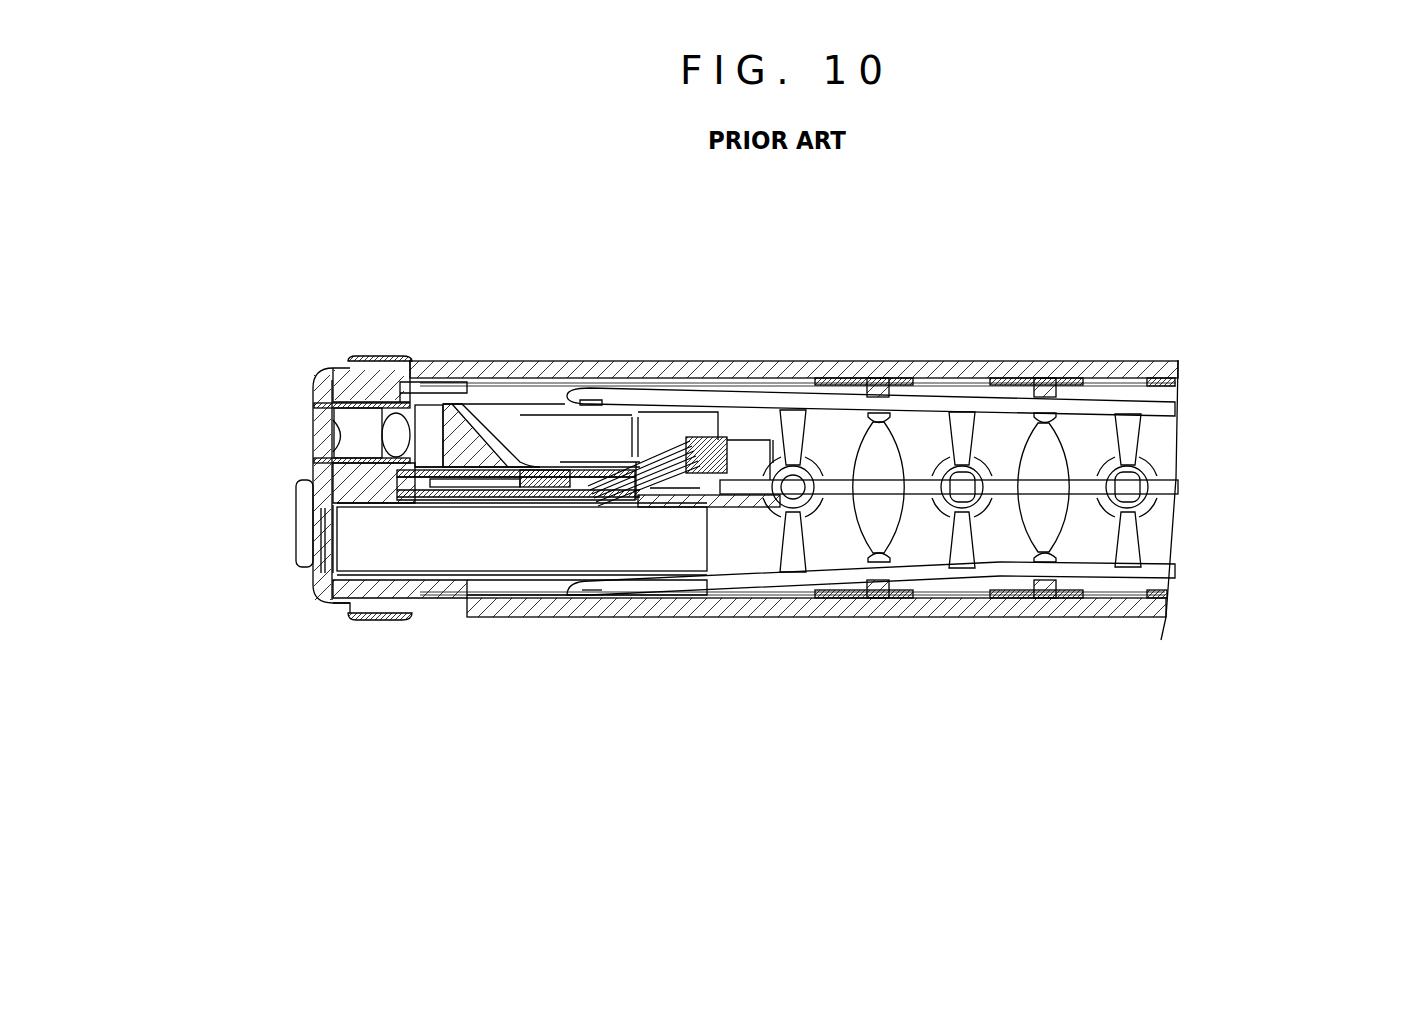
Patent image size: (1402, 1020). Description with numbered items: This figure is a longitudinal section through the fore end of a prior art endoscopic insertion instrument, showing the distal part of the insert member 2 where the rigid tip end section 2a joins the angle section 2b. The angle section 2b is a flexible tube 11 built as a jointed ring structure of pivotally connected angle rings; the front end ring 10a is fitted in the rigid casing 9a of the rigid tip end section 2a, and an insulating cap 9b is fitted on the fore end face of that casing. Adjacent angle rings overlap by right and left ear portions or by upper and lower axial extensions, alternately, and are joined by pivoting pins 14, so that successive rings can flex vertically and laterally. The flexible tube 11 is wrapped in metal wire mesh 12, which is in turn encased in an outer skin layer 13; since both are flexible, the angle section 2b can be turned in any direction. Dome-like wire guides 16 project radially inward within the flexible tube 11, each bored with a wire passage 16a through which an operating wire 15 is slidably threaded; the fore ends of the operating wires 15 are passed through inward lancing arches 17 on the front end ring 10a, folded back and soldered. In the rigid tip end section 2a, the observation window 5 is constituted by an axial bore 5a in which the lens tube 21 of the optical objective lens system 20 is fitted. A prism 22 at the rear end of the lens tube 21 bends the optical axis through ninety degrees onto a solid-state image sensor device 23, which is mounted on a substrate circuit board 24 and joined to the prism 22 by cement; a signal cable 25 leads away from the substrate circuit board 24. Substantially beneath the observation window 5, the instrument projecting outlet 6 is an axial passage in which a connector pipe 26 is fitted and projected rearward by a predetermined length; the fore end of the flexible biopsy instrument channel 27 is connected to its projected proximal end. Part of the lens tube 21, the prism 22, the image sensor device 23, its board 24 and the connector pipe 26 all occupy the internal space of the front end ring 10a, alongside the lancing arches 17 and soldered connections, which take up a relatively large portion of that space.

The insert member 2 is at (882, 210).
The rigid tip end section 2a is at (316, 605).
The angle section 2b is at (1128, 640).
The observation window 5 is at (313, 440).
The axial bore 5a is at (365, 417).
The instrument projecting outlet 6 is at (377, 552).
The rigid casing 9a is at (385, 593).
The insulating cap 9b is at (321, 590).
The front end ring 10a is at (705, 360).
The flexible tube 11 is at (800, 362).
The metal wire mesh 12 is at (1107, 622).
The outer skin layer 13 is at (1152, 372).
The pivoting pin 14 is at (879, 373).
The operating wire 15 is at (1158, 408).
The wire guide 16 is at (778, 360).
The wire passage 16a is at (856, 382).
The lancing arch 17 is at (590, 395).
The optical objective lens system 20 is at (386, 356).
The lens tube 21 is at (313, 366).
The prism 22 is at (458, 440).
The solid-state image sensor device 23 is at (452, 487).
The substrate circuit board 24 is at (533, 487).
The signal cable 25 is at (658, 440).
The connector pipe 26 is at (540, 575).
The biopsy instrument channel 27 is at (715, 578).